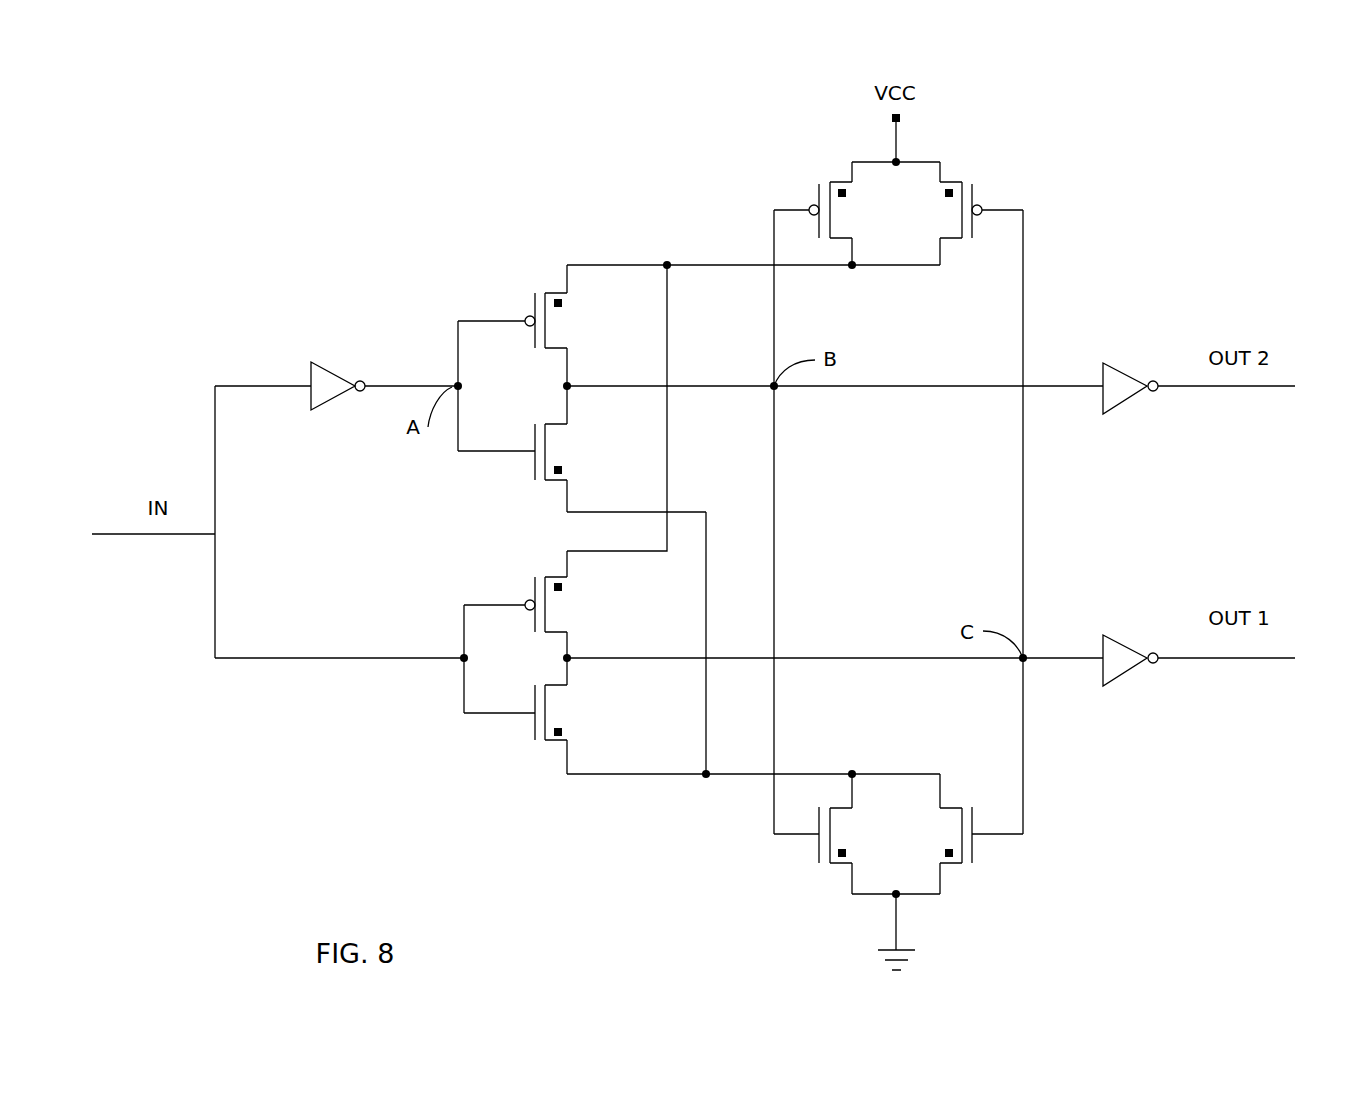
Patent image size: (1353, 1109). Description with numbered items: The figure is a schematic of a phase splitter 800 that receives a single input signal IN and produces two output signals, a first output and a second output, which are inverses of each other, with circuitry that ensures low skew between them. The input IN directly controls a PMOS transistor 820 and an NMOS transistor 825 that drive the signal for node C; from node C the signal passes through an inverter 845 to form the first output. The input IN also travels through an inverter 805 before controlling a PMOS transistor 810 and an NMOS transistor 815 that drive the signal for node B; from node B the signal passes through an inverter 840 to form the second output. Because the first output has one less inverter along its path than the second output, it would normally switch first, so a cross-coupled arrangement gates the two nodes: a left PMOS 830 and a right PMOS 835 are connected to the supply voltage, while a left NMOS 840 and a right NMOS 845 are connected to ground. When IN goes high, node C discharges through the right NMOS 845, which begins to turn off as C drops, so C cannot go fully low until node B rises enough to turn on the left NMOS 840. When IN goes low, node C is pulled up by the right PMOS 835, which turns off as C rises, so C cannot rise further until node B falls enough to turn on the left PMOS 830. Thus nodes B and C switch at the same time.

The phase splitter 800 is at (286, 796).
The inverter 805 is at (331, 362).
The PMOS transistor 810 is at (543, 302).
The NMOS transistor 815 is at (543, 467).
The PMOS transistor 820 is at (543, 585).
The NMOS transistor 825 is at (543, 742).
The left PMOS 830 is at (830, 195).
The right PMOS 835 is at (962, 200).
The left NMOS / inverter 840 is at (1127, 370).
The right NMOS / inverter 845 is at (1130, 645).